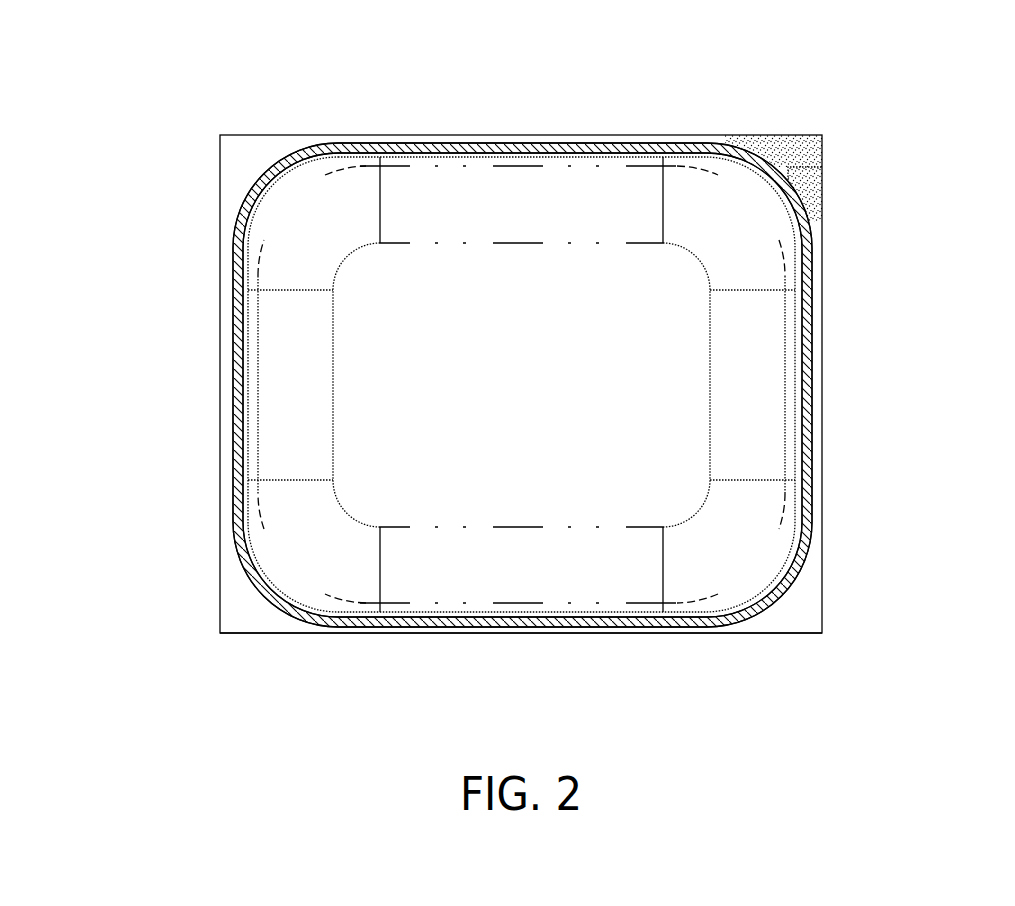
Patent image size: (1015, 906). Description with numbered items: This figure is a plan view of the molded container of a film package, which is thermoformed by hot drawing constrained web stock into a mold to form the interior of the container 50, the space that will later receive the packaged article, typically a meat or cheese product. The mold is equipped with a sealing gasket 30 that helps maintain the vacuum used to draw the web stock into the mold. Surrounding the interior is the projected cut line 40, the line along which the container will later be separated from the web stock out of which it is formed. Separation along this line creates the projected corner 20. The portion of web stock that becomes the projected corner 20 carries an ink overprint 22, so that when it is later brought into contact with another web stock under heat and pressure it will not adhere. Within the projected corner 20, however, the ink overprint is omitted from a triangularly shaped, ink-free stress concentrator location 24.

The projected corner 20 is at (840, 142).
The ink overprint 22 is at (784, 122).
The stress concentrator location 24 is at (808, 163).
The sealing gasket 30 is at (586, 652).
The projected cut line 40 is at (506, 120).
The interior of the container 50 is at (355, 398).